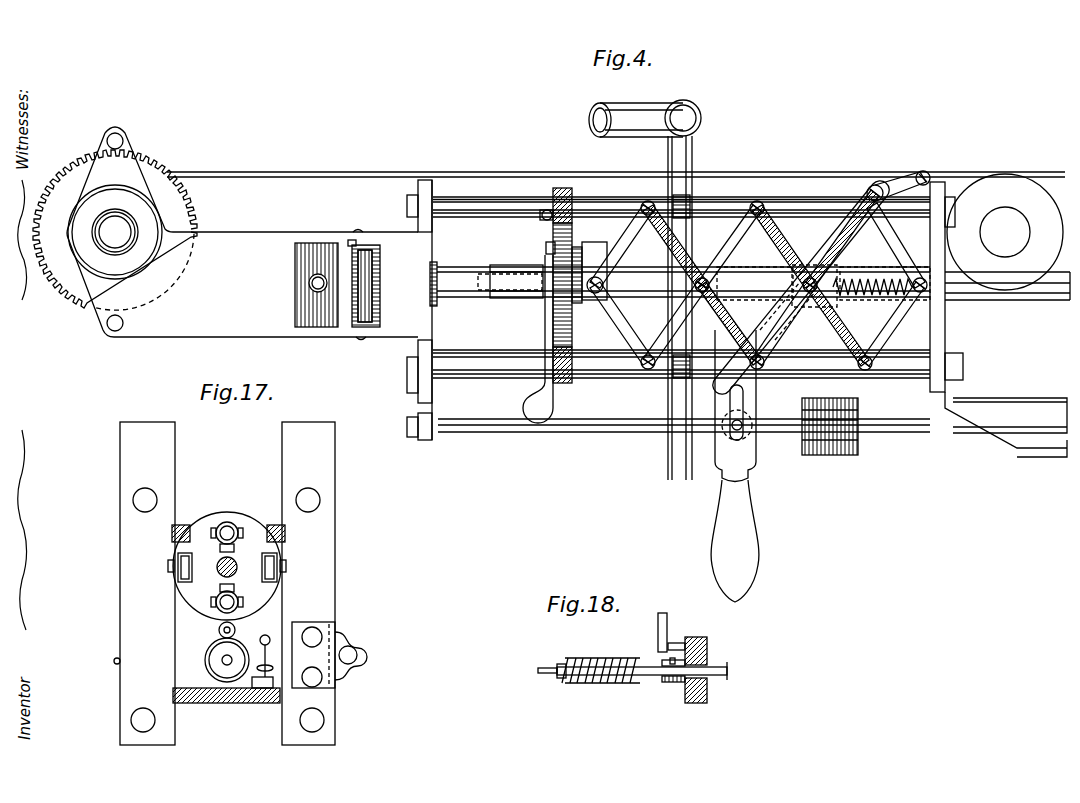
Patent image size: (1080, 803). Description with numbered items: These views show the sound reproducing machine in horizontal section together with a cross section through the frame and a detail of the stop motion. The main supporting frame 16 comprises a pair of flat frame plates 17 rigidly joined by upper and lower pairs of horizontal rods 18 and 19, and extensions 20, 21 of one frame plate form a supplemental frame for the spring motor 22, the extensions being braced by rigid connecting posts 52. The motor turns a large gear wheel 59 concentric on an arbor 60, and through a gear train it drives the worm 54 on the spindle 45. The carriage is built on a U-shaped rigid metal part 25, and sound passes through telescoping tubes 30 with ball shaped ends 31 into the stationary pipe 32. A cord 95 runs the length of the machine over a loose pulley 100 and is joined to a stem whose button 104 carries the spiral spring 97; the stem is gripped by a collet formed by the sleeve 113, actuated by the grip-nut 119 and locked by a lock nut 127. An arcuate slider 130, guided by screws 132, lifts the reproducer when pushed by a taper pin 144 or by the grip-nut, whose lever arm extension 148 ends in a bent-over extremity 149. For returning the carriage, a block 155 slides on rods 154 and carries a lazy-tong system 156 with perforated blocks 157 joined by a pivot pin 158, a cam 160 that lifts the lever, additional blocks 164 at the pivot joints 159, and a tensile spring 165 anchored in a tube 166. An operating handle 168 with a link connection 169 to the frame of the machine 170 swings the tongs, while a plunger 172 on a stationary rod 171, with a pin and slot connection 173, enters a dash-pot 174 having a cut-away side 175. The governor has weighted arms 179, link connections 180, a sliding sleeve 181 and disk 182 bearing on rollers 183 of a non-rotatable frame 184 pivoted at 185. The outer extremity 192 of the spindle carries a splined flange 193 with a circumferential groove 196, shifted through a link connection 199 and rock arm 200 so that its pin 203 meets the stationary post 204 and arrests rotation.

In FIG. 4, the main supporting frame 16 is at (681, 278).
In FIG. 4, the frame plates 17 is at (433, 222).
In FIG. 17, the frame plates 17 is at (325, 466).
In FIG. 17, the upper horizontal rods 18 is at (144, 508).
In FIG. 17, the lower horizontal rods 19 is at (145, 708).
In FIG. 17, the frame plate extension 20 is at (182, 525).
In FIG. 4, the frame plate extension 21 is at (242, 232).
In FIG. 4, the spring motor 22 is at (115, 230).
In FIG. 4, the U-shaped rigid metal part 25 is at (563, 188).
In FIG. 4, the telescoping tubes 30 is at (629, 103).
In FIG. 4, the ball shaped ends 31 is at (701, 126).
In FIG. 4, the stationary pipe 32 is at (667, 166).
In FIG. 18, the spindle 45 is at (544, 674).
In FIG. 4, the connecting posts 52 is at (123, 141).
In FIG. 18, the worm 54 is at (606, 683).
In FIG. 4, the large gear wheel 59 is at (185, 205).
In FIG. 4, the arbor 60 is at (115, 232).
In FIG. 4, the cord 95 is at (488, 172).
In FIG. 17, the cord 95 is at (114, 663).
In FIG. 17, the spiral spring 97 is at (220, 665).
In FIG. 4, the loose pulley 100 is at (1005, 232).
In FIG. 17, the button 104 is at (205, 660).
In FIG. 4, the sleeve 113 is at (463, 267).
In FIG. 4, the grip-nut 119 is at (508, 300).
In FIG. 4, the lock nut 127 is at (434, 306).
In FIG. 4, the slider 130 is at (553, 194).
In FIG. 4, the screws 132 is at (542, 220).
In FIG. 4, the taper pin 144 is at (576, 247).
In FIG. 4, the lever arm extension 148 is at (545, 340).
In FIG. 4, the bent-over extremity 149 is at (548, 402).
In FIG. 4, the rods 154 is at (617, 318).
In FIG. 4, the block 155 is at (620, 270).
In FIG. 4, the lazy-tong system 156 is at (735, 236).
In FIG. 4, the perforated blocks 157 is at (597, 242).
In FIG. 4, the connecting pivot pin 158 is at (594, 294).
In FIG. 4, the pivot joints 159 is at (705, 265).
In FIG. 4, the cam 160 is at (540, 284).
In FIG. 4, the additional blocks 164 is at (752, 268).
In FIG. 4, the tensile spring 165 is at (866, 298).
In FIG. 4, the tube 166 is at (980, 300).
In FIG. 4, the operating handle 168 is at (750, 508).
In FIG. 4, the link connection 169 is at (905, 178).
In FIG. 4, the frame of the machine 170 is at (928, 175).
In FIG. 4, the stationary rod 171 is at (614, 432).
In FIG. 4, the plunger 172 is at (822, 455).
In FIG. 4, the pin and slot connection 173 is at (737, 440).
In FIG. 4, the dash-pot 174 is at (1010, 415).
In FIG. 4, the cut-away side 175 is at (1006, 428).
In FIG. 4, the weighted arms 179 is at (308, 282).
In FIG. 17, the weighted arms 179 is at (220, 540).
In FIG. 4, the link connections 180 is at (327, 287).
In FIG. 4, the sliding sleeve 181 is at (300, 300).
In FIG. 17, the sliding sleeve 181 is at (237, 568).
In FIG. 4, the disk 182 is at (380, 257).
In FIG. 17, the disk 182 is at (188, 597).
In FIG. 17, the rollers 183 is at (187, 570).
In FIG. 4, the non-rotatable frame 184 is at (350, 246).
In FIG. 4, the pivot 185 is at (360, 231).
In FIG. 18, the outer extremity of spindle 192 is at (650, 676).
In FIG. 18, the flange 193 is at (707, 652).
In FIG. 18, the circumferential groove 196 is at (700, 640).
In FIG. 17, the link connection 199 is at (266, 636).
In FIG. 17, the rock arm 200 is at (268, 657).
In FIG. 18, the pin 203 is at (676, 642).
In FIG. 18, the stationary post 204 is at (658, 635).